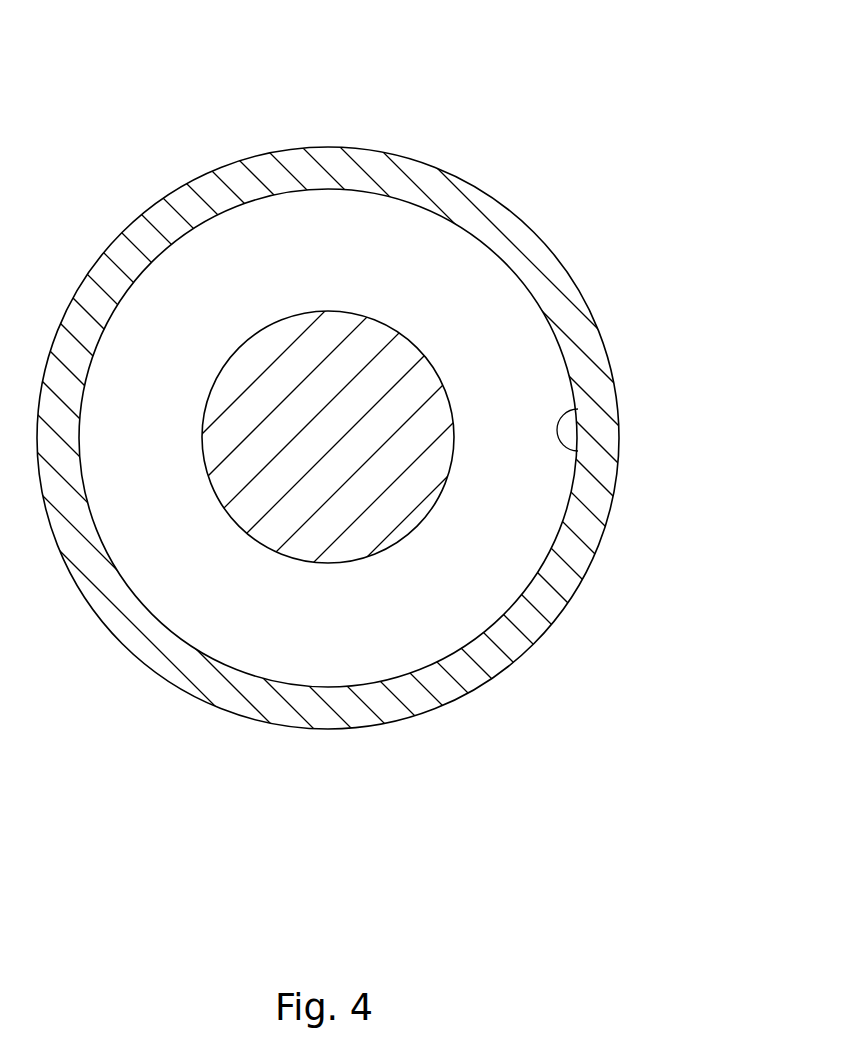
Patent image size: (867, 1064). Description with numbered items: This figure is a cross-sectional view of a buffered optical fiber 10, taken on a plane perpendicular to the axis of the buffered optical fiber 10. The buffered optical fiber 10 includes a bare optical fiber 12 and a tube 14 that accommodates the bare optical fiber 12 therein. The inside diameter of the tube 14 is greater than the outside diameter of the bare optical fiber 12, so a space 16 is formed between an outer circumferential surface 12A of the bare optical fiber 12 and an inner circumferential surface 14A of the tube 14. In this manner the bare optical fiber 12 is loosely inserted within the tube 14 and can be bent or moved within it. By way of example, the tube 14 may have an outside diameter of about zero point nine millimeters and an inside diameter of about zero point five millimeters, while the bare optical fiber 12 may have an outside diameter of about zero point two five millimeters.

The buffered optical fiber 10 is at (626, 101).
The bare optical fiber 12 is at (253, 495).
The outer circumferential surface 12A is at (265, 327).
The tube 14 is at (590, 348).
The inner circumferential surface 14A is at (578, 451).
The space 16 is at (342, 630).